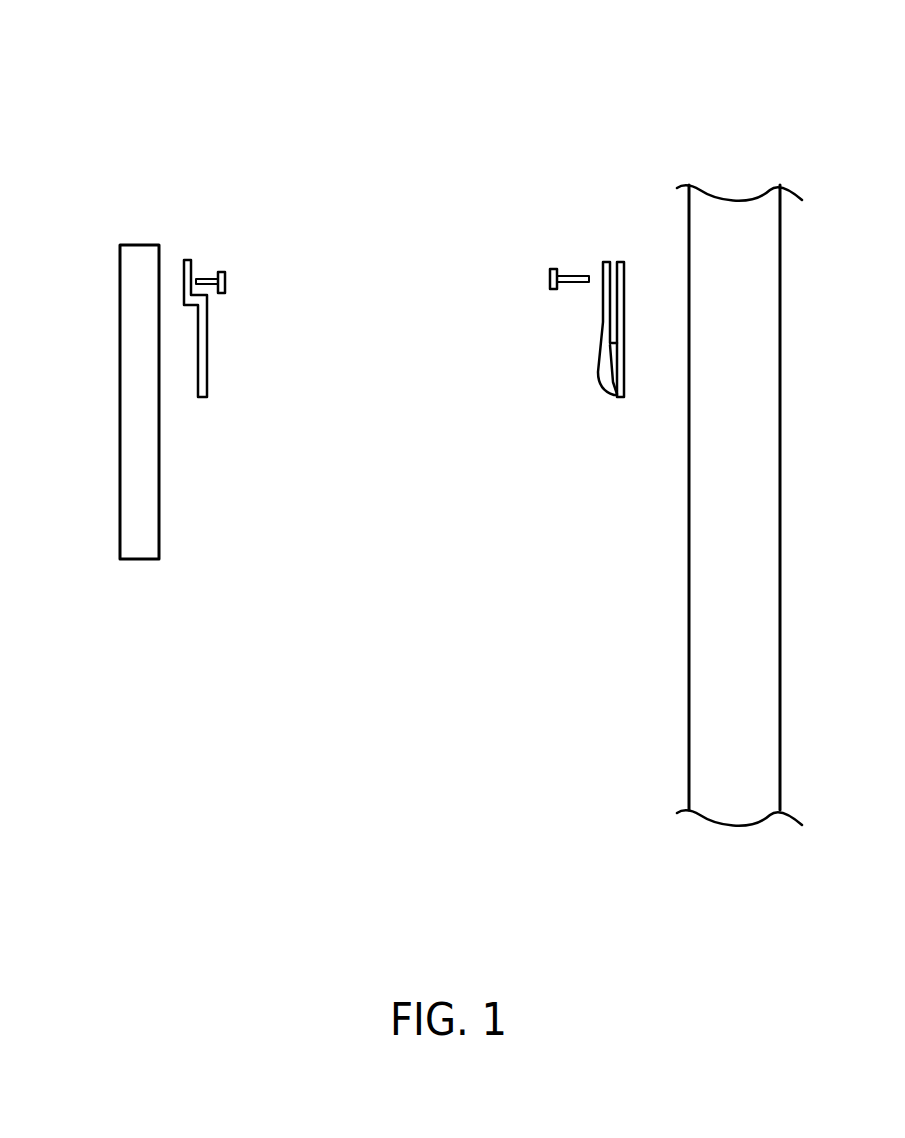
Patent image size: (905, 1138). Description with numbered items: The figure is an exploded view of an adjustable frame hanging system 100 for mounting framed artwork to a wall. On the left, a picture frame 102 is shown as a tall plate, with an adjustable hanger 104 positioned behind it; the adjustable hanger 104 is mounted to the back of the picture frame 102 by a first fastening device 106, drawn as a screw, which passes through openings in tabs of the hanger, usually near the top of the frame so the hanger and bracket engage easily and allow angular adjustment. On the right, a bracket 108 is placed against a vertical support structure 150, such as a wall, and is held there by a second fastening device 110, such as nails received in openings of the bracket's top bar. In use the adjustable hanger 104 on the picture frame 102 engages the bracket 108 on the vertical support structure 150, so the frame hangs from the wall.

The adjustable frame hanging system 100 is at (118, 142).
The picture frame 102 is at (131, 450).
The adjustable hanger 104 is at (207, 391).
The first fastening device 106 is at (221, 272).
The bracket 108 is at (620, 396).
The second fastening device 110 is at (575, 272).
The vertical support structure 150 is at (703, 608).